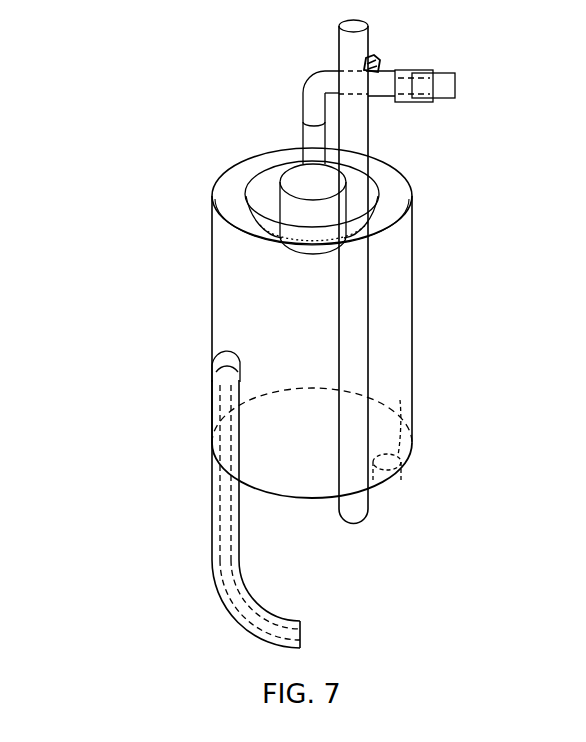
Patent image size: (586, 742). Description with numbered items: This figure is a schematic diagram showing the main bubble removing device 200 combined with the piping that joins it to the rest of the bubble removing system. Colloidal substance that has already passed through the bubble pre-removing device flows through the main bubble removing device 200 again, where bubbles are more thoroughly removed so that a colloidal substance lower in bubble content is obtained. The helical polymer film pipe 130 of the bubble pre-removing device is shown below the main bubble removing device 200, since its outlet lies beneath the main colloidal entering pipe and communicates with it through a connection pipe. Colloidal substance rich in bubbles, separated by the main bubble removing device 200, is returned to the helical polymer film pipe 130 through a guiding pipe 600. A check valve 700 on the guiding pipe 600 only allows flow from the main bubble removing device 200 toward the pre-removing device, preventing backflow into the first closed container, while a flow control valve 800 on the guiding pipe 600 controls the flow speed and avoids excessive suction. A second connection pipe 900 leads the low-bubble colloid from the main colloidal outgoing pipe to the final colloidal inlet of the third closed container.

The helical polymer film pipe 130 is at (220, 553).
The main bubble removing device 200 is at (238, 291).
The guiding pipe 600 is at (303, 88).
The check valve 700 is at (412, 88).
The flow control valve 800 is at (380, 62).
The second connection pipe 900 is at (352, 342).